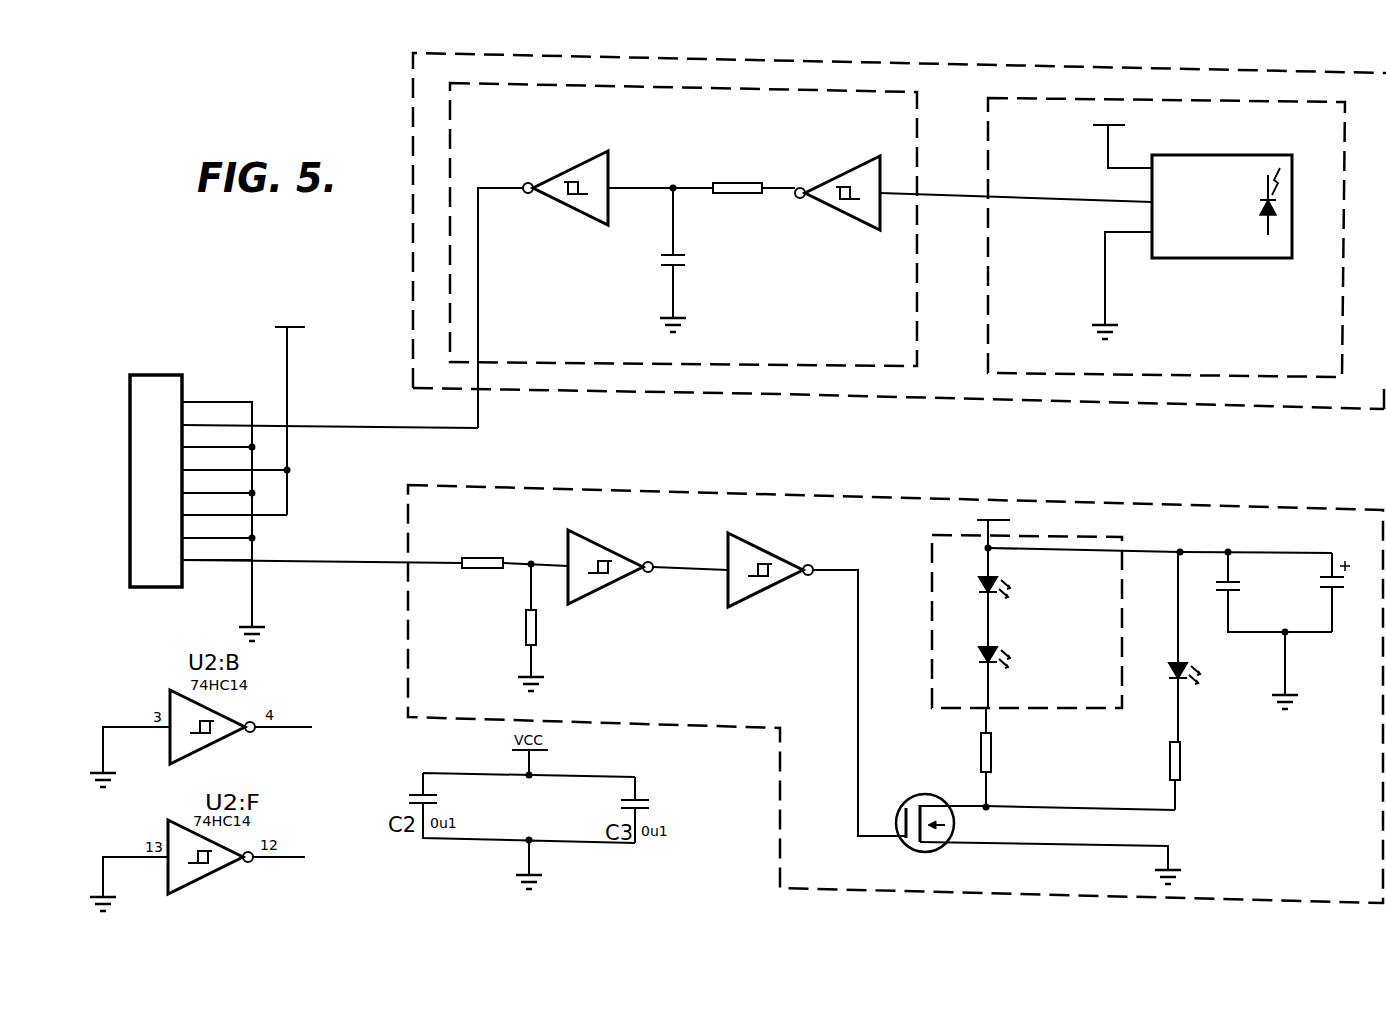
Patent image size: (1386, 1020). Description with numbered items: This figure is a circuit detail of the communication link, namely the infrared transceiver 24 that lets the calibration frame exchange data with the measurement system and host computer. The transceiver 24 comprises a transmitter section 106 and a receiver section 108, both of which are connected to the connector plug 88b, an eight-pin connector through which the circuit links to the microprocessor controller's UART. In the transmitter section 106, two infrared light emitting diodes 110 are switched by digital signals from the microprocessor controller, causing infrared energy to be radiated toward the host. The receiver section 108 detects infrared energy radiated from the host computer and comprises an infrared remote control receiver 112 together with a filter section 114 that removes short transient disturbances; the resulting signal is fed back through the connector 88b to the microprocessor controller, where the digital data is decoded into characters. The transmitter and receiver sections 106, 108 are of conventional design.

The infrared transceiver 24 is at (784, 478).
The connector plug 88b is at (158, 533).
The transmitter section 106 is at (782, 694).
The receiver section 108 is at (1192, 393).
The infrared light emitting diodes 110 is at (970, 590).
The infrared remote control receiver 112 is at (1040, 337).
The filter section 114 is at (828, 343).